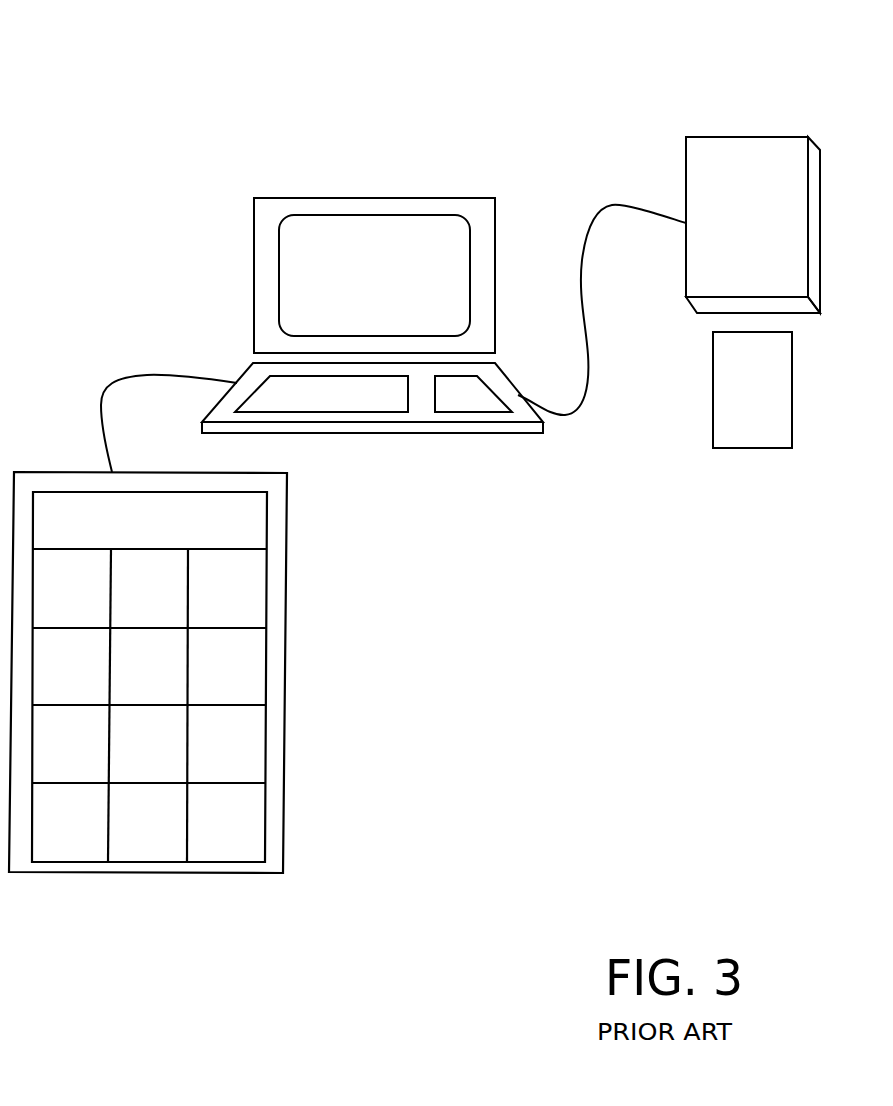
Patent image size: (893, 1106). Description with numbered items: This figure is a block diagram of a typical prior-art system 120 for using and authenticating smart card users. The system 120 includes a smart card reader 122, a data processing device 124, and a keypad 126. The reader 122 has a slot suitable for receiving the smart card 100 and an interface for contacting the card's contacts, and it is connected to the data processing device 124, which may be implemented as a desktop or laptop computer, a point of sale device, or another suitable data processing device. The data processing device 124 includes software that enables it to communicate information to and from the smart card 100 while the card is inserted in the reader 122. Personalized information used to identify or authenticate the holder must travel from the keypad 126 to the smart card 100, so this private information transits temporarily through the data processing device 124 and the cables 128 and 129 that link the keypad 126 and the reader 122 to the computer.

The system 120 is at (163, 87).
The data processing device 124 is at (335, 198).
The cable 128 is at (132, 373).
The keypad 126 is at (107, 872).
The cable 129 is at (627, 200).
The smart card reader 122 is at (767, 278).
The smart card 100 is at (738, 398).